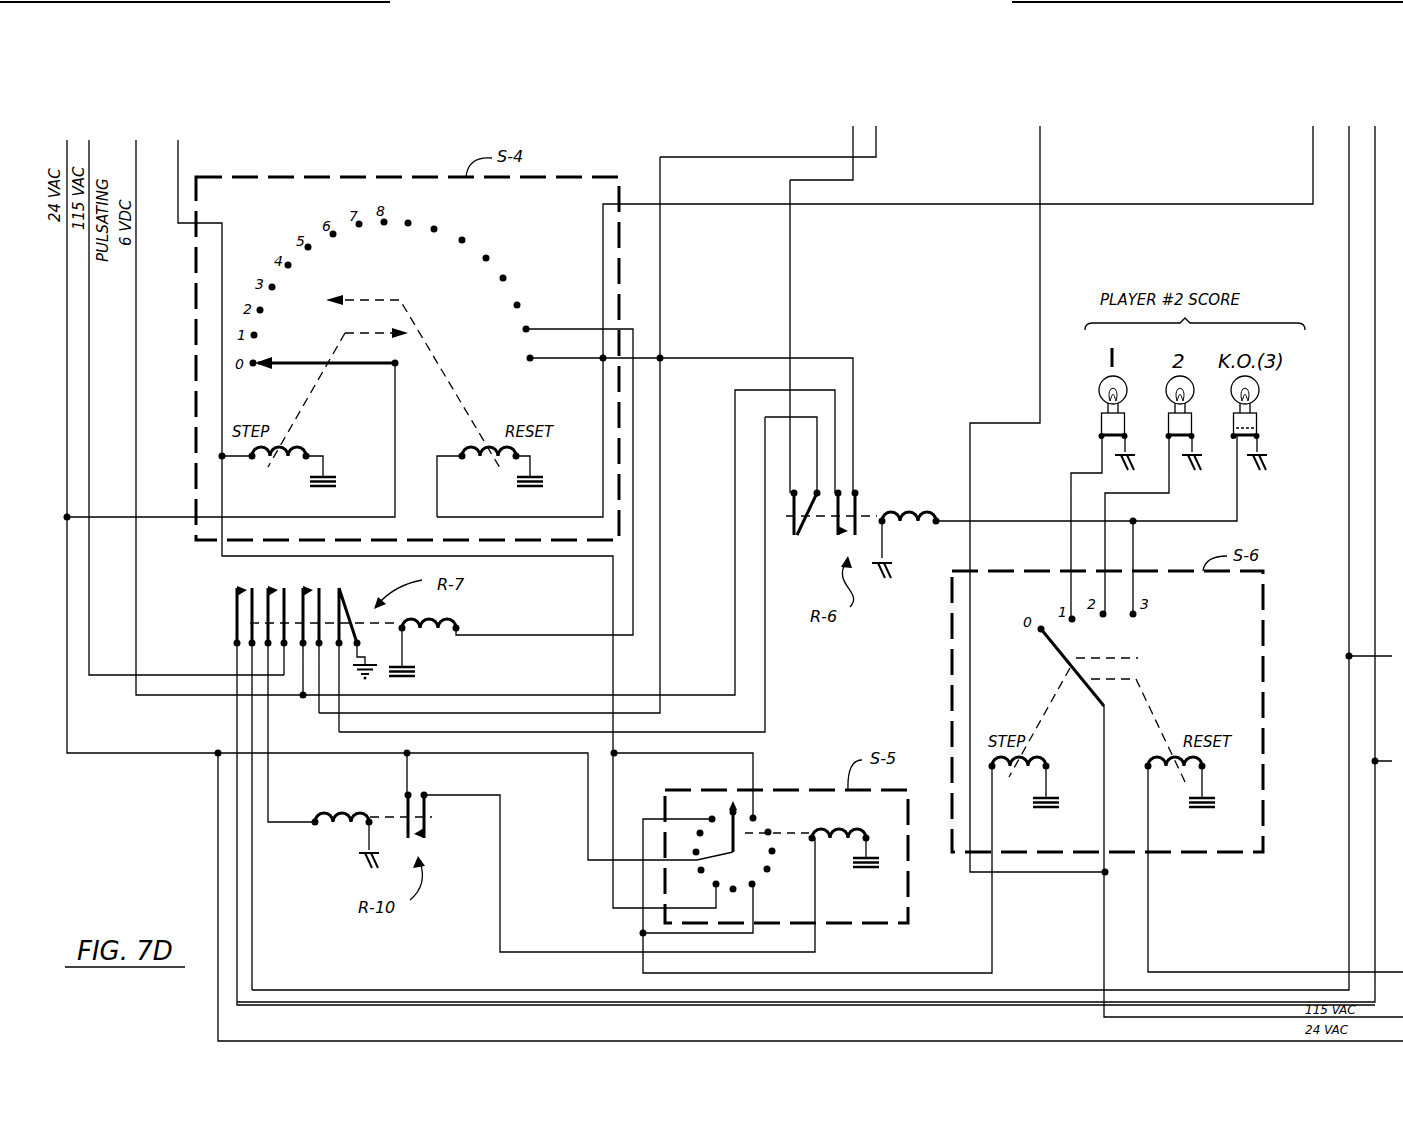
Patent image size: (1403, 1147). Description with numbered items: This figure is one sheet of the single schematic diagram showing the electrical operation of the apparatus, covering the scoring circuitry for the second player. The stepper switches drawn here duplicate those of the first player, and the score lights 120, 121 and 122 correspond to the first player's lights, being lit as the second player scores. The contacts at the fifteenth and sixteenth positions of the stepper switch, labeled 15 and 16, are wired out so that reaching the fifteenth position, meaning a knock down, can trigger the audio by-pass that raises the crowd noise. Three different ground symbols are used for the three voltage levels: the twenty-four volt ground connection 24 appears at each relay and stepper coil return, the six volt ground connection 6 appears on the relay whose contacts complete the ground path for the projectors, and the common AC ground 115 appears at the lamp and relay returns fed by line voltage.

The 24v ground connection 24 is at (330, 472).
The 6v ground connection 6 is at (375, 657).
The 115v AC ground 115 is at (1133, 460).
The stepping switch contact 15 is at (538, 323).
The stepping switch contact 16 is at (541, 351).
The score light 120 is at (1100, 380).
The score light 121 is at (1168, 380).
The score light 122 is at (1259, 390).